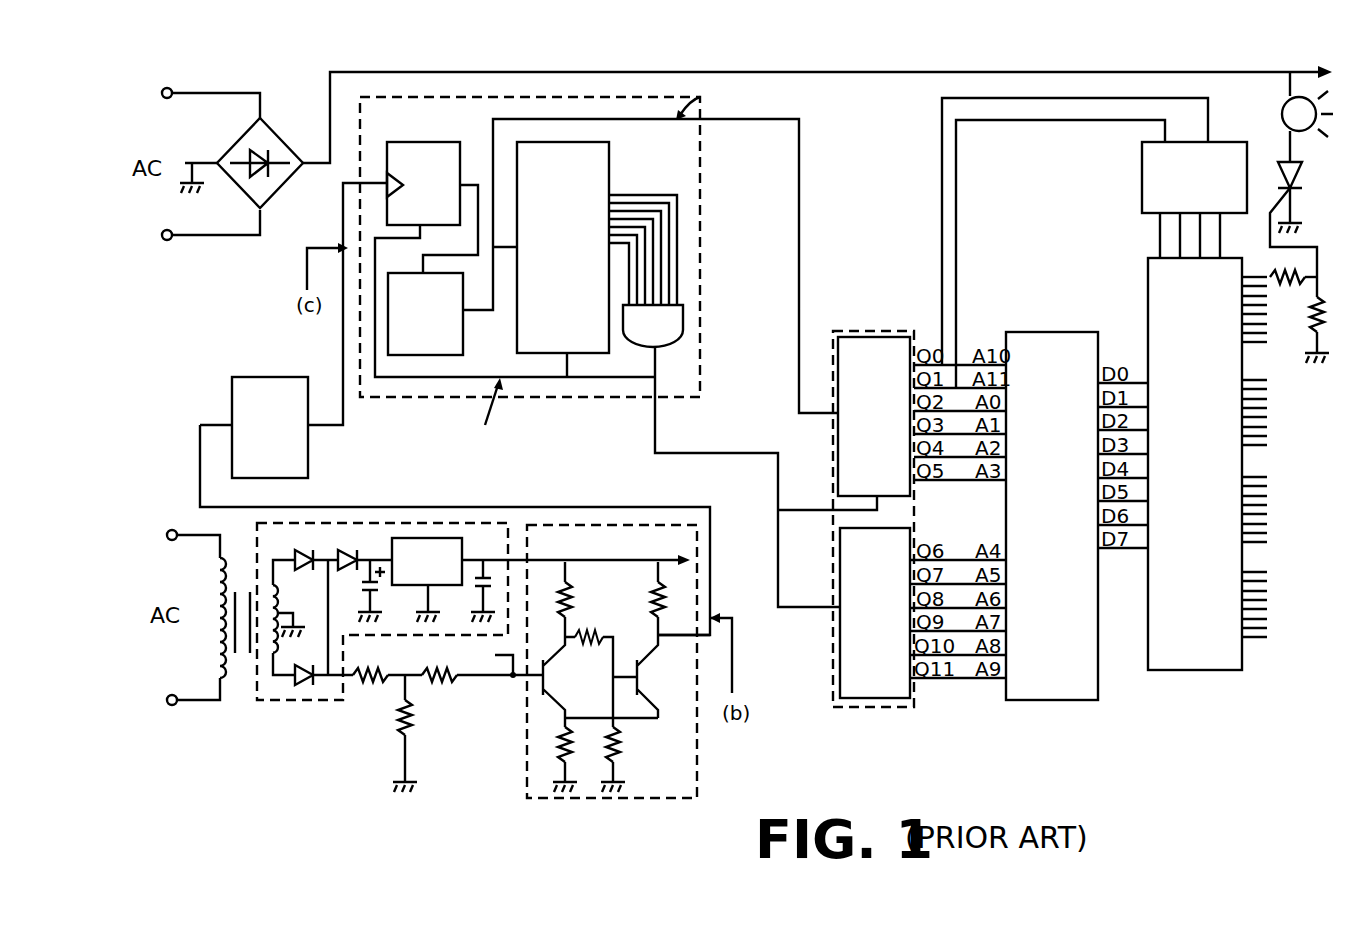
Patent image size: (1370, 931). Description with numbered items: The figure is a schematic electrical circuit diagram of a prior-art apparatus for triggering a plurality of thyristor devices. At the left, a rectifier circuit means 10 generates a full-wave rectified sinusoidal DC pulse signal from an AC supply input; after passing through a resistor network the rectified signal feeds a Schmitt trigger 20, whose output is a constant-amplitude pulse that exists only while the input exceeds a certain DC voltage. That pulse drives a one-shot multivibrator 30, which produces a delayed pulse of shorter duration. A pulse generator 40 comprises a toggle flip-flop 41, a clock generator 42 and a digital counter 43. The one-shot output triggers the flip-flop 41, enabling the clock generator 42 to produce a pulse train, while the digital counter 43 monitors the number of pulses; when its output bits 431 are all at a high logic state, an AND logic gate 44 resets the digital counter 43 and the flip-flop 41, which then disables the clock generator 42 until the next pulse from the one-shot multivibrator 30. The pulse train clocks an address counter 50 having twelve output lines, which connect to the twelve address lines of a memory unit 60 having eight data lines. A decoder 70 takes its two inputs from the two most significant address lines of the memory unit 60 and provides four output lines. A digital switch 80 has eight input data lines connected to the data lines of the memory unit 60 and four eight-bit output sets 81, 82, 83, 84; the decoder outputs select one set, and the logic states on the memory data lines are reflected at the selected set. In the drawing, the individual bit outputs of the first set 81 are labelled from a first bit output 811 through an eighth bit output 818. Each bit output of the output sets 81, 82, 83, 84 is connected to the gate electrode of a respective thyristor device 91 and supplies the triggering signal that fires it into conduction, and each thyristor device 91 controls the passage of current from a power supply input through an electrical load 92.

The rectifier circuit means 10 is at (307, 700).
The Schmitt trigger 20 is at (522, 722).
The one-shot multivibrator 30 is at (262, 377).
The pulse generator 40 is at (632, 397).
The toggle flip-flop 41 is at (416, 142).
The clock generator 42 is at (397, 262).
The digital counter 43 is at (563, 142).
The output bits 431 is at (626, 250).
The AND logic gate 44 is at (670, 347).
The address counter 50 is at (871, 330).
The memory unit 60 is at (1056, 330).
The decoder 70 is at (1142, 171).
The digital switch 80 is at (1182, 464).
The 8-bit output set 81 is at (1239, 310).
The digital switch 811 is at (1254, 272).
The digital switch 818 is at (1254, 347).
The 8-bit output set 82 is at (1240, 412).
The 8-bit output set 83 is at (1240, 509).
The 8-bit output set 84 is at (1240, 604).
The thyristor device 91 is at (1306, 181).
The electrical load 92 is at (1288, 107).